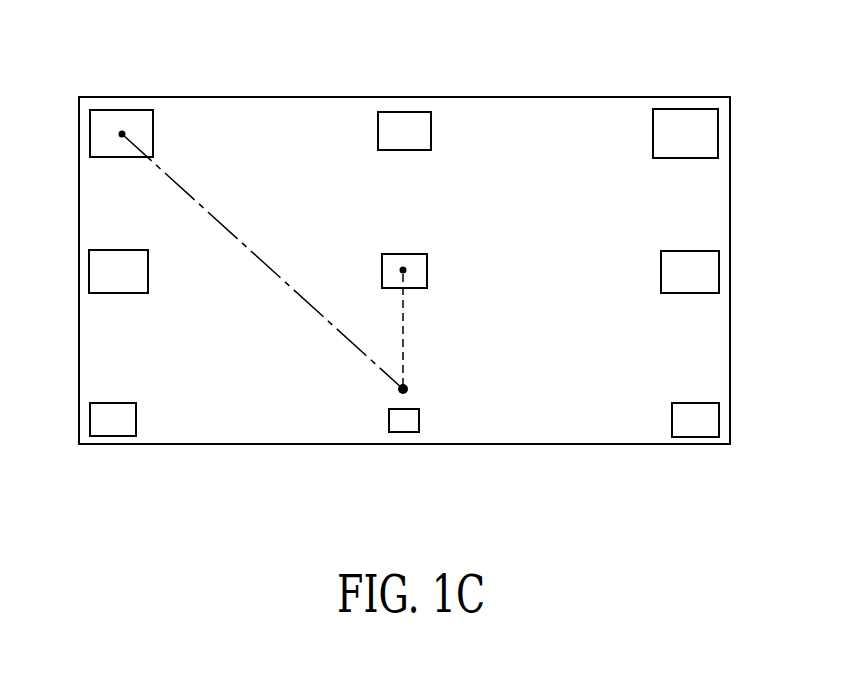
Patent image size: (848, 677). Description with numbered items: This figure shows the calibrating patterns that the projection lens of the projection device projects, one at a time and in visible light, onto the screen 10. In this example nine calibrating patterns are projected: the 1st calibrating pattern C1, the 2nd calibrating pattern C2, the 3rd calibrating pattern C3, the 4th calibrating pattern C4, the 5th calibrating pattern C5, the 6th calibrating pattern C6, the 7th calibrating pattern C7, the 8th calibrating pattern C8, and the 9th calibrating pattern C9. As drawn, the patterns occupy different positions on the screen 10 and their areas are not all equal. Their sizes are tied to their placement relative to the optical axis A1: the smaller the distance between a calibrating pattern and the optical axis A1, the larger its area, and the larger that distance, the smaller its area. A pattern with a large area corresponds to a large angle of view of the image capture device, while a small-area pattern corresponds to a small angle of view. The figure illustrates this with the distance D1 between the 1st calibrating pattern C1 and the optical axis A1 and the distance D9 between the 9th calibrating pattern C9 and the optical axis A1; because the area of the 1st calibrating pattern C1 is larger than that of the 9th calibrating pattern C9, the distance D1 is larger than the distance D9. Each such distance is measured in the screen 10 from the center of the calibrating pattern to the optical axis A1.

The screen 10 is at (554, 97).
The 1st calibrating pattern C1 is at (120, 125).
The 2nd calibrating pattern C2 is at (402, 122).
The 3rd calibrating pattern C3 is at (683, 123).
The 4th calibrating pattern C4 is at (710, 270).
The 5th calibrating pattern C5 is at (695, 422).
The 6th calibrating pattern C6 is at (404, 420).
The 7th calibrating pattern C7 is at (112, 421).
The 8th calibrating pattern C8 is at (98, 270).
The 9th calibrating pattern C9 is at (420, 268).
The optical axis A1 is at (406, 386).
The distance between 1st calibrating pattern and optical axis D1 is at (263, 262).
The distance between 9th calibrating pattern and optical axis D9 is at (403, 326).